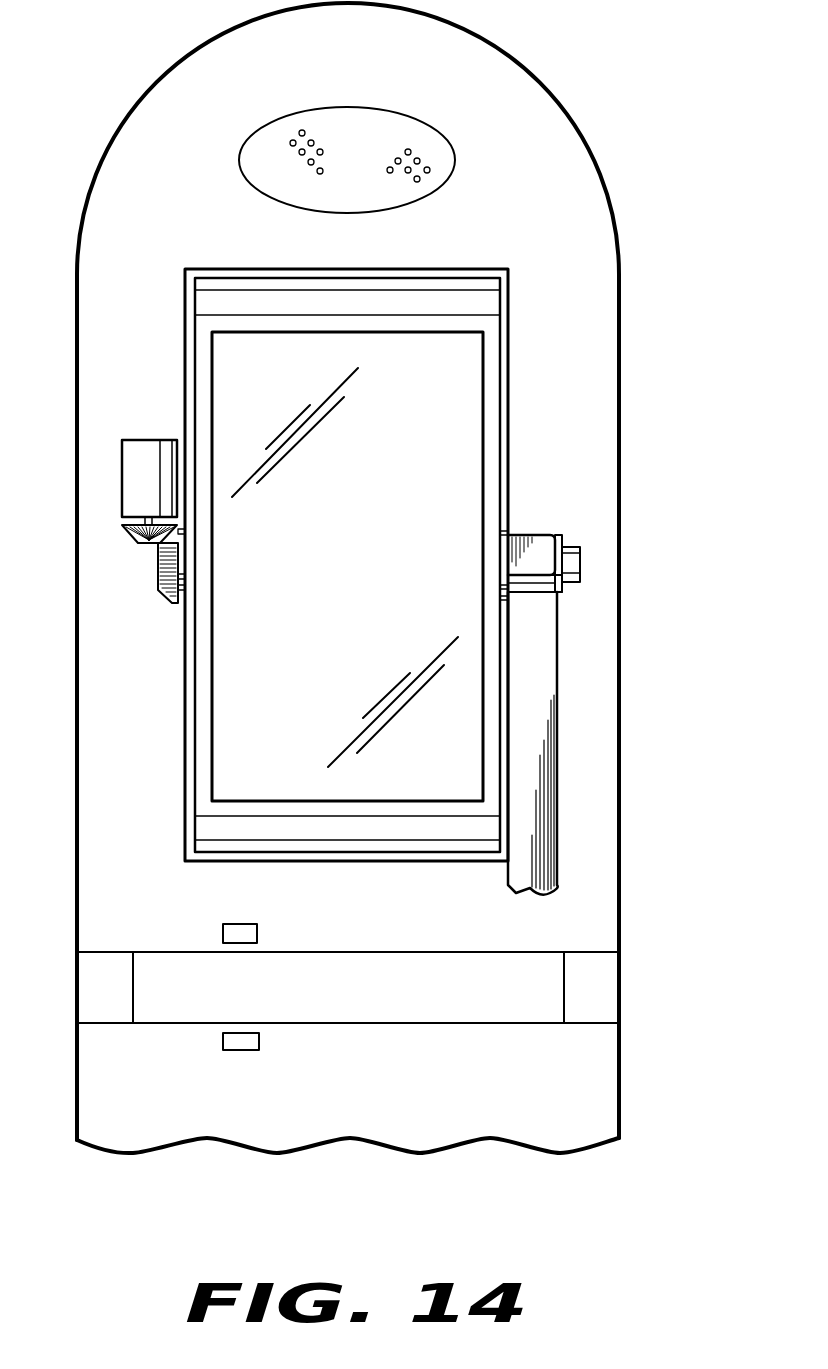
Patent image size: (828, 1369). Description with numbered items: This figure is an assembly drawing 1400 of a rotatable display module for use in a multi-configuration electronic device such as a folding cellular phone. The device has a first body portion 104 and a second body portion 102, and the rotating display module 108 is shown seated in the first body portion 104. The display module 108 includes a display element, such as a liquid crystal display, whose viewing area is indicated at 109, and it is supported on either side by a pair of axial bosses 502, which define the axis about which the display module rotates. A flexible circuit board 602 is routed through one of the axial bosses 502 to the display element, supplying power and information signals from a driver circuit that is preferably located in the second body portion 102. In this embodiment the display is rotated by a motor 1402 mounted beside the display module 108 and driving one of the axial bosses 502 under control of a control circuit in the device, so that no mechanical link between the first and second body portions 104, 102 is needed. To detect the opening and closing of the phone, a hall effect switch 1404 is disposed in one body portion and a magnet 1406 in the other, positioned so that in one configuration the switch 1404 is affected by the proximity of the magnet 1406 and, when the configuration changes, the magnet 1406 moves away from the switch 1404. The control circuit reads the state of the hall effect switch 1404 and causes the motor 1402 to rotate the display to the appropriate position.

The assembly drawing 1400 is at (387, 652).
The second body portion 102 is at (619, 1092).
The first body portion 104 is at (619, 686).
The rotating display module 108 is at (507, 426).
The window 109 is at (390, 585).
The axial bosses 502 is at (582, 562).
The flexible circuit board 602 is at (515, 893).
The motor 1402 is at (142, 440).
The hall effect switch 1404 is at (237, 1050).
The magnet 1406 is at (223, 928).